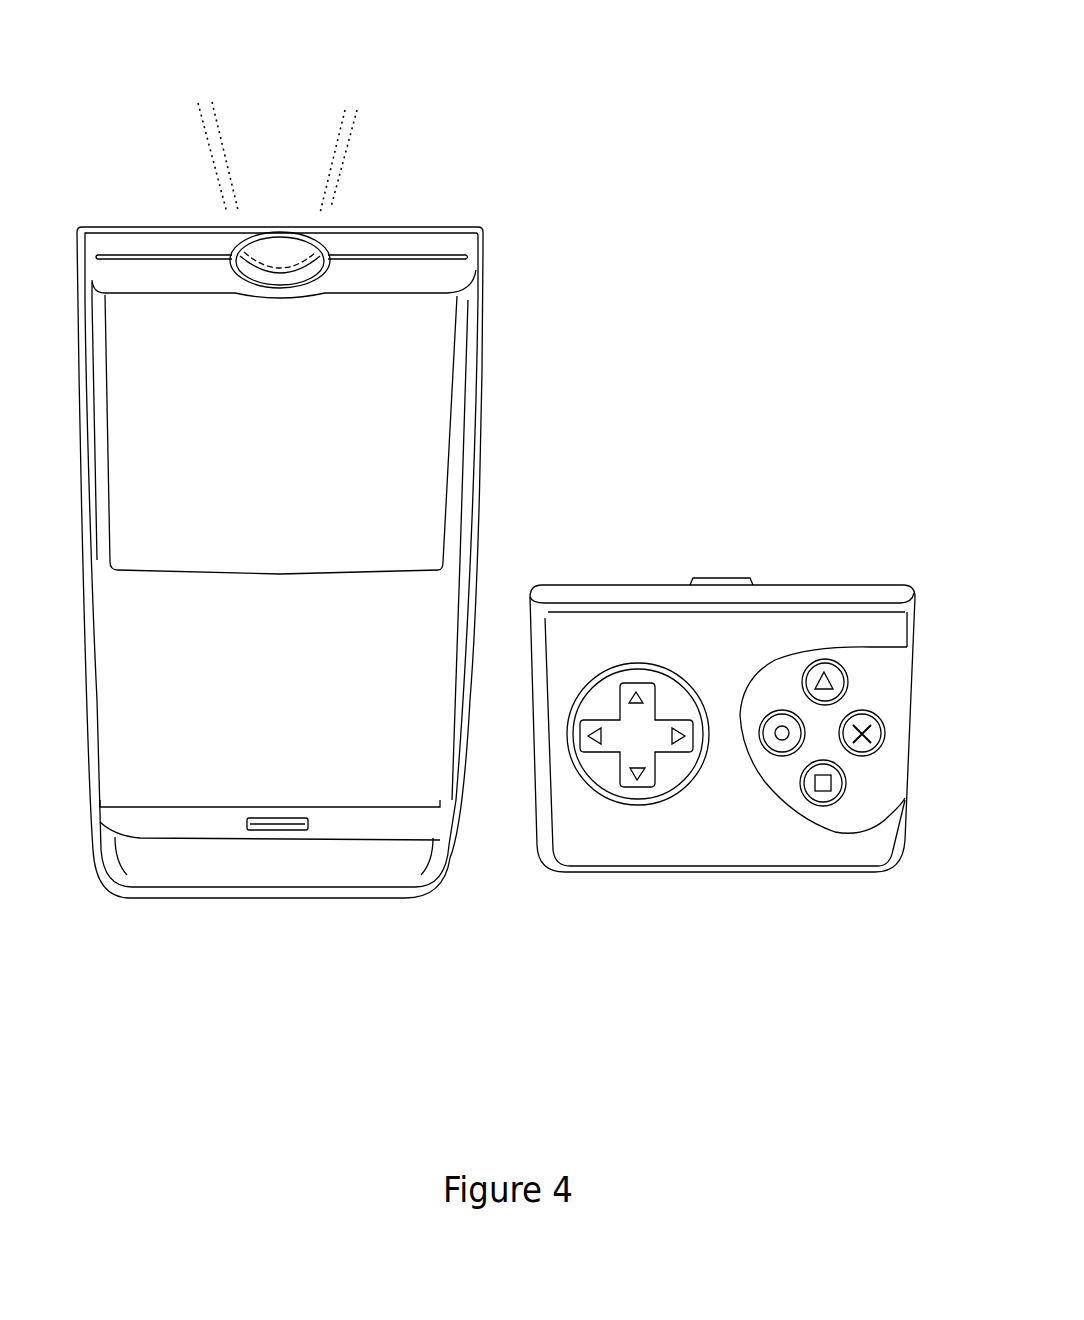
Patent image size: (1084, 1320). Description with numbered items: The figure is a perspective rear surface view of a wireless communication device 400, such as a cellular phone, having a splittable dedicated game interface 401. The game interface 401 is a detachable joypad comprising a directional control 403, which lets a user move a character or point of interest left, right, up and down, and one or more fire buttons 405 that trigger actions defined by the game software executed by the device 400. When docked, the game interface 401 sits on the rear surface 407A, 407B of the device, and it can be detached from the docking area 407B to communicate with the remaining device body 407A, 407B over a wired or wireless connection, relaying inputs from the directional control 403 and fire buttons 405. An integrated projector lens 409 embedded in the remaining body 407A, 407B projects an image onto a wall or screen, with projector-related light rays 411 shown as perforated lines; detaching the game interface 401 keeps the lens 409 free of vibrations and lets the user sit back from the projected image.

The wireless communication device 400 is at (525, 1125).
The splittable dedicated game interface 401 is at (702, 637).
The directional control 403 is at (608, 755).
The fire buttons 405 is at (845, 647).
The rear surface 407A is at (397, 340).
The docking area 407B is at (240, 722).
The integrated projector lens 409 is at (277, 258).
The projector-related light rays 411 is at (360, 153).